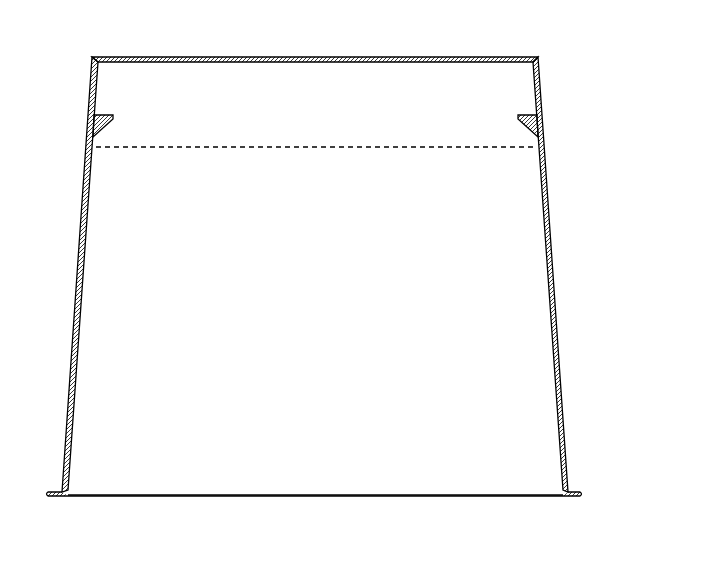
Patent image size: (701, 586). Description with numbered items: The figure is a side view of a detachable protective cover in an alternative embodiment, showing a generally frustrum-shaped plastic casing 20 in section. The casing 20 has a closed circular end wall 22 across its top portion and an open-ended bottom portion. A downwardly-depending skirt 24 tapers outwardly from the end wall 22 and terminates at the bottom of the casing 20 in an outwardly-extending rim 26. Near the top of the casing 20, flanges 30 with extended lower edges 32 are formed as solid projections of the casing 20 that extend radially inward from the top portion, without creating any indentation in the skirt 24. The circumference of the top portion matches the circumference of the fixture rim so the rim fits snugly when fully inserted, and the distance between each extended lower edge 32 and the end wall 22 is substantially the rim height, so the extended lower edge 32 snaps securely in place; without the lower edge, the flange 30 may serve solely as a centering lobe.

The plastic casing 20 is at (92, 57).
The closed circular end wall 22 is at (446, 57).
The downwardly-depending skirt 24 is at (549, 238).
The outwardly-extending rim 26 is at (576, 493).
The flange 30 is at (100, 130).
The extended lower edge 32 is at (100, 116).